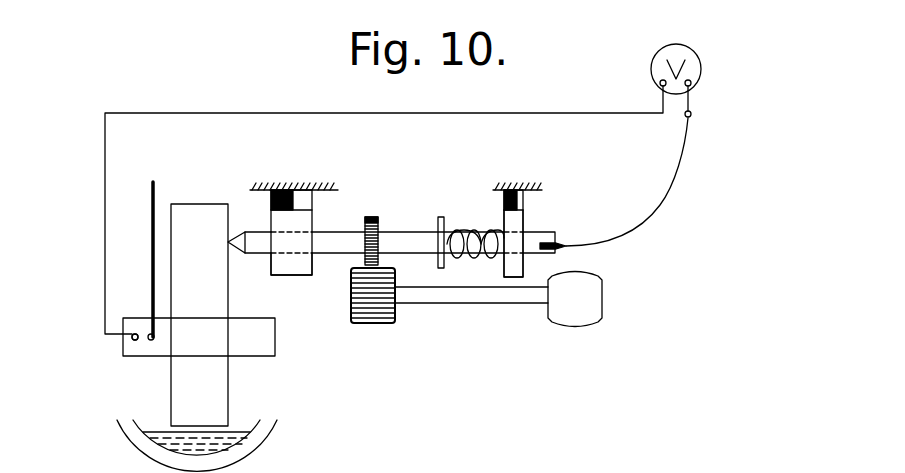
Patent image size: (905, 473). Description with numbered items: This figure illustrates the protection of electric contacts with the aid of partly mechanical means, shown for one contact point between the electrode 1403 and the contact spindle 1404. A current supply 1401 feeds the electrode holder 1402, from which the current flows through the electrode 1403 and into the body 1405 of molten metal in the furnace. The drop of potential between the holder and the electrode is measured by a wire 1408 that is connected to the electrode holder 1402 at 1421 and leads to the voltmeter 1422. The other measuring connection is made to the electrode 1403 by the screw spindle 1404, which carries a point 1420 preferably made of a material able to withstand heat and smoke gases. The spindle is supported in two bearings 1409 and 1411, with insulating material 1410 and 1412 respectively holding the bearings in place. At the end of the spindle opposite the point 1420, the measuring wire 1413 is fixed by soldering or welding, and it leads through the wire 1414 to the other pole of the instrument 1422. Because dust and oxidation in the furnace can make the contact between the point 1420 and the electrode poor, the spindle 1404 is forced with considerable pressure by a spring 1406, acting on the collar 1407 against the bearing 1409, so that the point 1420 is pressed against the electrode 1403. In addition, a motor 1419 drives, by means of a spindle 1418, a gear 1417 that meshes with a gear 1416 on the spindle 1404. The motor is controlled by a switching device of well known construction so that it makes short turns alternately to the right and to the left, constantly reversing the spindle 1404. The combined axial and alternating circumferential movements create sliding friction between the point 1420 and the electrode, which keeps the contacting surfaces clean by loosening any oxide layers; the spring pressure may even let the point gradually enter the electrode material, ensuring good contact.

The current supply 1401 is at (155, 197).
The electrode holder 1402 is at (199, 337).
The electrode 1403 is at (199, 315).
The contact spindle 1404 is at (343, 249).
The body of molten metal 1405 is at (236, 428).
The spring 1406 is at (466, 231).
The collar 1407 is at (441, 216).
The wire 1408 is at (104, 242).
The bearing 1409 is at (524, 224).
The insulating material 1410 is at (524, 200).
The bearing 1411 is at (287, 273).
The insulating material 1412 is at (305, 198).
The measuring wire 1413 is at (652, 218).
The wire 1414 is at (691, 101).
The gear 1416 is at (379, 219).
The gear 1417 is at (369, 324).
The spindle 1418 is at (479, 291).
The motor 1419 is at (575, 299).
The point 1420 is at (246, 232).
The connection point 1421 is at (131, 338).
The voltmeter 1422 is at (700, 60).